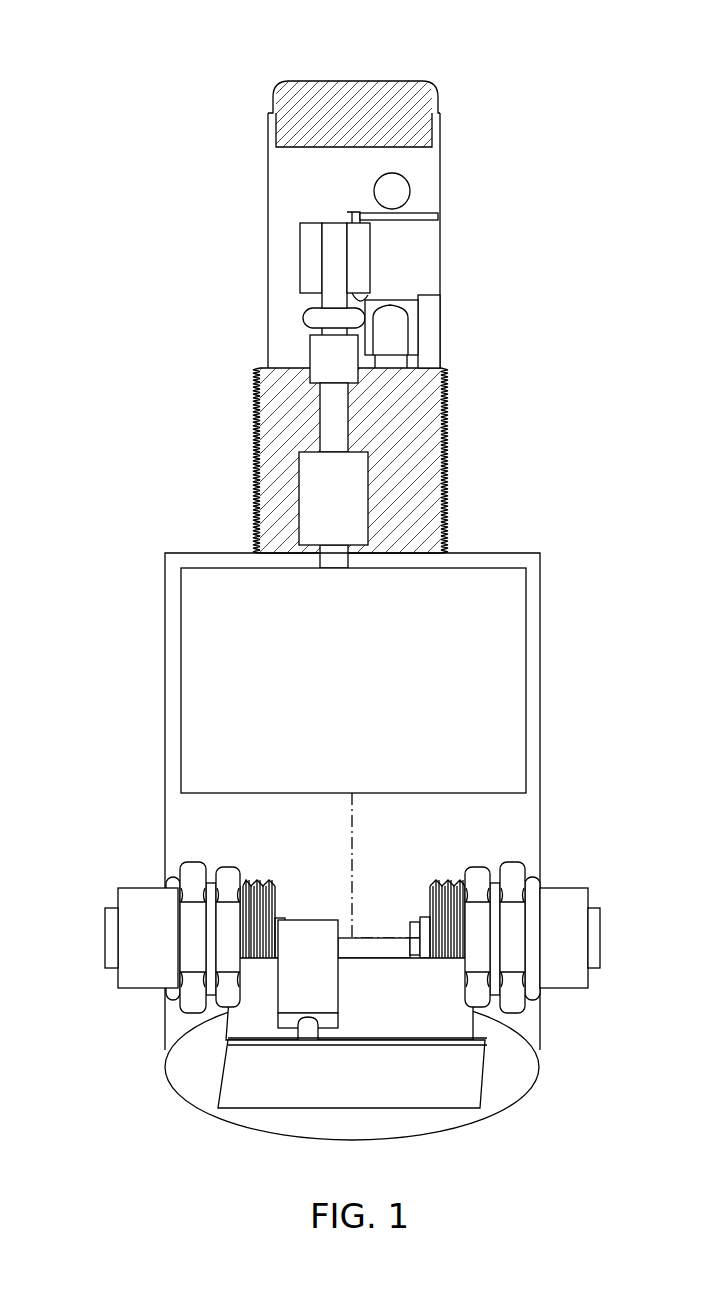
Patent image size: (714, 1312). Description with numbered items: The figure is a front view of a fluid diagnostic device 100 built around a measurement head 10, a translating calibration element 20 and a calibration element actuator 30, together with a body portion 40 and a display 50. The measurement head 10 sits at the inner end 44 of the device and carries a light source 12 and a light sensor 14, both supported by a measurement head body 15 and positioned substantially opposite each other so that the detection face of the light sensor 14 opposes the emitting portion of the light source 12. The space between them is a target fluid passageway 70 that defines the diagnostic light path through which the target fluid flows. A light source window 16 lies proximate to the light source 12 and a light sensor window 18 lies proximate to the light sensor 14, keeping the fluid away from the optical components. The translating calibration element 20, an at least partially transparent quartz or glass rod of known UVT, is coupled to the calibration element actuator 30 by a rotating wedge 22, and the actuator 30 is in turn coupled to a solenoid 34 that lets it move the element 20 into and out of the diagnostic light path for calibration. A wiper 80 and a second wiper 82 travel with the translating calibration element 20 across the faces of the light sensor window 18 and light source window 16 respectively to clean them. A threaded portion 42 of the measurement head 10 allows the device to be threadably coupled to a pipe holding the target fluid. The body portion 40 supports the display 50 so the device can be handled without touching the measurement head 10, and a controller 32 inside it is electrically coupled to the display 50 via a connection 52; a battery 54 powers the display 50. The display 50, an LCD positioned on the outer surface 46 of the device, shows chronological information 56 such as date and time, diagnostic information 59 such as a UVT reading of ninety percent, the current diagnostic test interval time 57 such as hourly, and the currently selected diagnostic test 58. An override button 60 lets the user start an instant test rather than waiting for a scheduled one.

The fluid diagnostic device 100 is at (444, 77).
The inner end 44 is at (352, 80).
The translating calibration element 20 is at (321, 211).
The light sensor 14 is at (410, 191).
The light sensor window 18 is at (412, 217).
The wiper 80 is at (351, 211).
The rotating wedge 22 is at (370, 244).
The calibration element actuator 30 is at (327, 272).
The second wiper 82 is at (370, 297).
The light source window 16 is at (412, 300).
The target fluid passageway 70 is at (467, 265).
The measurement head body 15 is at (272, 318).
The light source 12 is at (403, 335).
The measurement head 10 is at (212, 368).
The threaded portion 42 is at (405, 427).
The solenoid 34 is at (355, 485).
The body portion 40 is at (123, 578).
The controller 32 is at (508, 663).
The connection 52 is at (355, 840).
The override button 60 is at (311, 1034).
The battery 54 is at (466, 1023).
The outer surface 46 is at (183, 1072).
The display 50 is at (360, 1117).
The current diagnostic test interval time 57 is at (478, 1062).
The currently selected diagnostic test 58 is at (478, 1092).
The chronological information 56 is at (249, 1106).
The diagnostic information 59 is at (408, 1098).